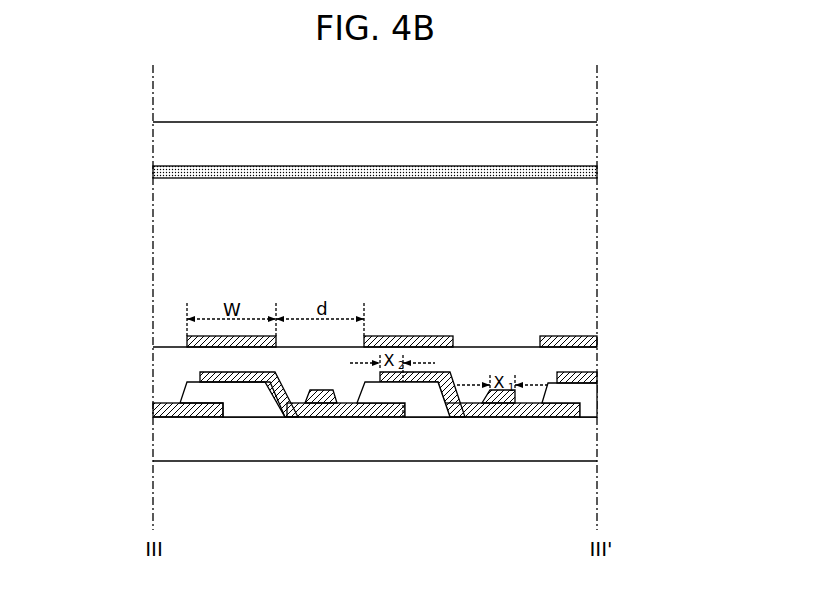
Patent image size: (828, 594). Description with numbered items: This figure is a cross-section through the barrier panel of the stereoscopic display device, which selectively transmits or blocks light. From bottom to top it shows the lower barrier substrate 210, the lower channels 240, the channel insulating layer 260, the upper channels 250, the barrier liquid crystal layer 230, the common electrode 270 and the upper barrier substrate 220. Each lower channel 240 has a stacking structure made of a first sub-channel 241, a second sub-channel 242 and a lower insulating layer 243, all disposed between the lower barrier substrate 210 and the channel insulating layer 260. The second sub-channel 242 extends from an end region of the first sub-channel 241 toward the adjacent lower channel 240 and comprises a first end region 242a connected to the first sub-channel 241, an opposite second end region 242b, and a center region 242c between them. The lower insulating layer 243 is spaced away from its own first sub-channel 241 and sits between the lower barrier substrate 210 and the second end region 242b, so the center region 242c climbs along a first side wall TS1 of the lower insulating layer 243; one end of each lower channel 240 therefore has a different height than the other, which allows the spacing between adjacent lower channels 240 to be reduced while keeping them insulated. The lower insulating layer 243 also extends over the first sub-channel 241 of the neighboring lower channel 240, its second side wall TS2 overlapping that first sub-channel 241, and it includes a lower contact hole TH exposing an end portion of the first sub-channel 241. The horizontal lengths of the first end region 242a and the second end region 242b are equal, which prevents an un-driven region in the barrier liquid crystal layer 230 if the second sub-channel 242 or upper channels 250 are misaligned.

The lower barrier substrate 210 is at (580, 437).
The upper barrier substrate 220 is at (165, 137).
The barrier liquid crystal layer 230 is at (580, 241).
The lower channel 240 is at (375, 469).
The first sub-channel 241 is at (333, 410).
The second sub-channel 242 is at (290, 410).
The first end region 242a is at (539, 449).
The second end region 242b is at (403, 405).
The center region 242c is at (477, 405).
The lower insulating layer 243 is at (240, 400).
The upper channel 250 is at (187, 340).
The channel insulating layer 260 is at (580, 360).
The common electrode 270 is at (585, 172).
The first side wall TS1 is at (268, 390).
The second side wall TS2 is at (348, 413).
The lower contact hole TH is at (548, 393).